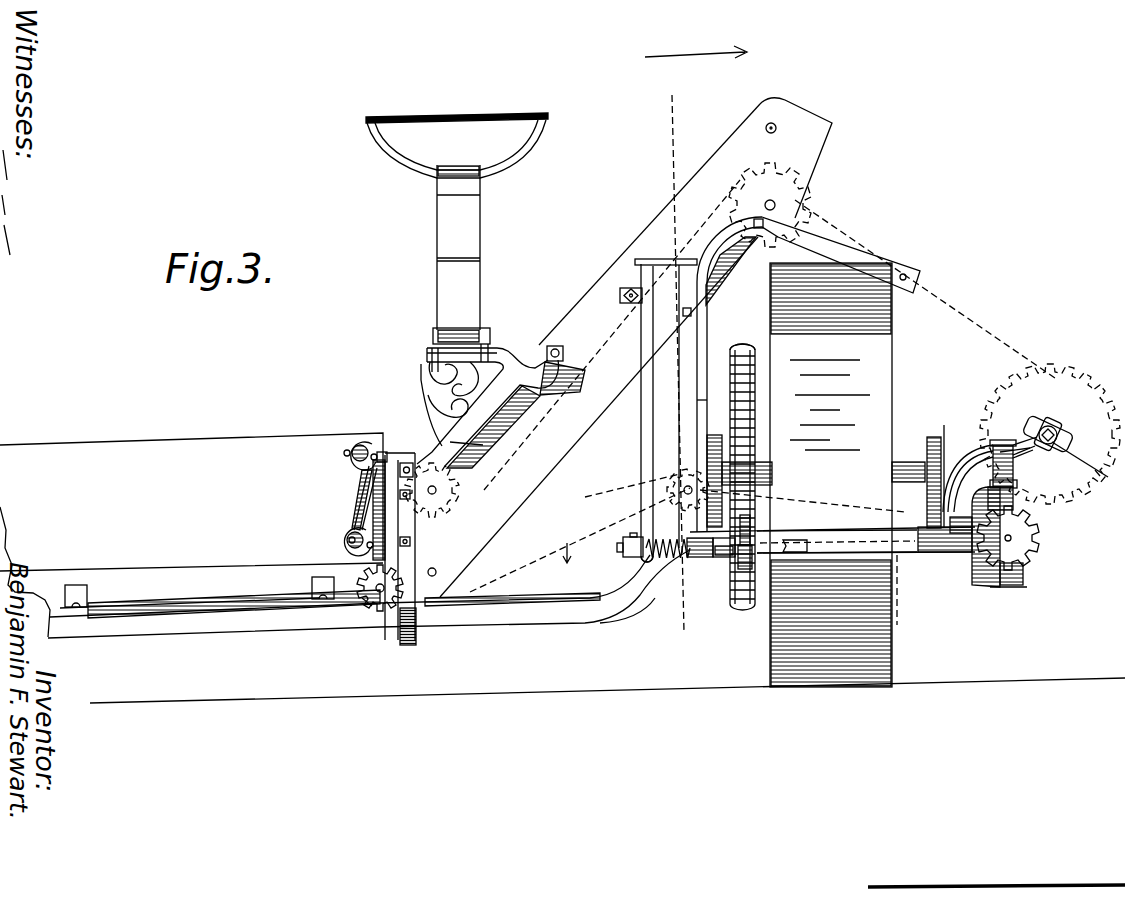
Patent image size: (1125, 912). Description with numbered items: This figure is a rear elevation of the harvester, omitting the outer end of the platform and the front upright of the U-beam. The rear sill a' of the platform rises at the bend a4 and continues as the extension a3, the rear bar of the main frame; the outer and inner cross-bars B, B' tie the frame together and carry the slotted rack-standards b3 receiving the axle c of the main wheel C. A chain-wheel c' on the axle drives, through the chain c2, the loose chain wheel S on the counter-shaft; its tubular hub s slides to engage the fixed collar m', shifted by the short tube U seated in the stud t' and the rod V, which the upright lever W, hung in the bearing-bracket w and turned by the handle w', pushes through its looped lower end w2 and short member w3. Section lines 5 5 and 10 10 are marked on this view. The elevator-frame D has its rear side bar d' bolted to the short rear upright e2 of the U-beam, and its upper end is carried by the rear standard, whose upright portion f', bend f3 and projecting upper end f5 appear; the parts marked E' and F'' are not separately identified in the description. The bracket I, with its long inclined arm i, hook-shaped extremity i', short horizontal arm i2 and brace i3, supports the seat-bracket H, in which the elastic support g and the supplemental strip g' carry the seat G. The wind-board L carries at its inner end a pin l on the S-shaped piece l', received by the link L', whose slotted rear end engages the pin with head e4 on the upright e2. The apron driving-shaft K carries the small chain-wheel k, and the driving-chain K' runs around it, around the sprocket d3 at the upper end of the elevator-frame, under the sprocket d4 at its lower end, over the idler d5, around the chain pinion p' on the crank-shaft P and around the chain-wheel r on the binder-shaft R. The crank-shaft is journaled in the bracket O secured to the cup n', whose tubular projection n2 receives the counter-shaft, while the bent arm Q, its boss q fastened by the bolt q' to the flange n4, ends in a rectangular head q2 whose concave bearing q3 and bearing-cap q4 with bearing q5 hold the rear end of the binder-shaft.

The wind-board L is at (191, 502).
The rear sill a' is at (369, 607).
The upward bends a4 is at (634, 592).
The rear upright e2 is at (412, 558).
The pin l is at (388, 492).
The sprocket wheel d4 is at (458, 498).
The rack E' is at (422, 640).
The driving-shaft K is at (373, 620).
The small driving-wheel k is at (365, 603).
The link L' is at (330, 486).
The S-shaped piece l' is at (342, 528).
The head e4 is at (352, 465).
The seat G is at (457, 145).
The elastic support g is at (430, 211).
The supplemental support strip g' is at (427, 294).
The seat-bracket H is at (473, 338).
The bracket I is at (432, 370).
The short arm i2 is at (430, 358).
The brace i3 is at (440, 392).
The hook-shaped extremity i' is at (544, 335).
The long arm i is at (470, 441).
The elevator-frame D is at (600, 350).
The rear side bar d' is at (612, 335).
The driving-chain K' is at (762, 396).
The arm rod F'' is at (738, 323).
The sprocket wheel d3 is at (812, 200).
The bend f3 is at (710, 240).
The projecting upper end f5 is at (870, 262).
The upright portion f' is at (678, 408).
The lever W is at (640, 385).
The crank-arm or handle w' is at (659, 224).
The bearing-bracket w is at (613, 268).
The short member w3 is at (640, 560).
The hook or loop w2 is at (646, 570).
The rod V is at (618, 549).
The section line 5 is at (679, 365).
The section line 10 is at (734, 589).
The main wheel C is at (831, 475).
The chain-wheel c' is at (762, 477).
The chain c2 is at (740, 362).
The axle c is at (823, 454).
The slotted rack-standards b3 is at (713, 440).
The idler d5 is at (668, 487).
The inner cross-bar B' is at (637, 501).
The outer cross-bar B is at (832, 526).
The outer stud t' is at (700, 579).
The short tube U is at (718, 560).
The chain wheel S is at (745, 570).
The tubular hub s is at (762, 568).
The collar m' is at (794, 505).
The rear sill extension a3 is at (825, 538).
The tubular projection n2 is at (935, 552).
The bent arm Q is at (963, 458).
The bolt q' is at (987, 429).
The tubular boss q is at (1025, 472).
The rectangular head q2 is at (1017, 432).
The concave bearing q3 is at (993, 440).
The bearing-cap q4 is at (1046, 425).
The concave bearing q5 is at (1051, 435).
The binder-shaft R is at (1050, 434).
The chain-wheel r is at (1095, 490).
The horizontal flange n4 is at (1040, 492).
The crank-shaft P is at (1013, 540).
The cup n' is at (986, 559).
The sprocket pinion p' is at (1025, 586).
The bracket O is at (1008, 578).